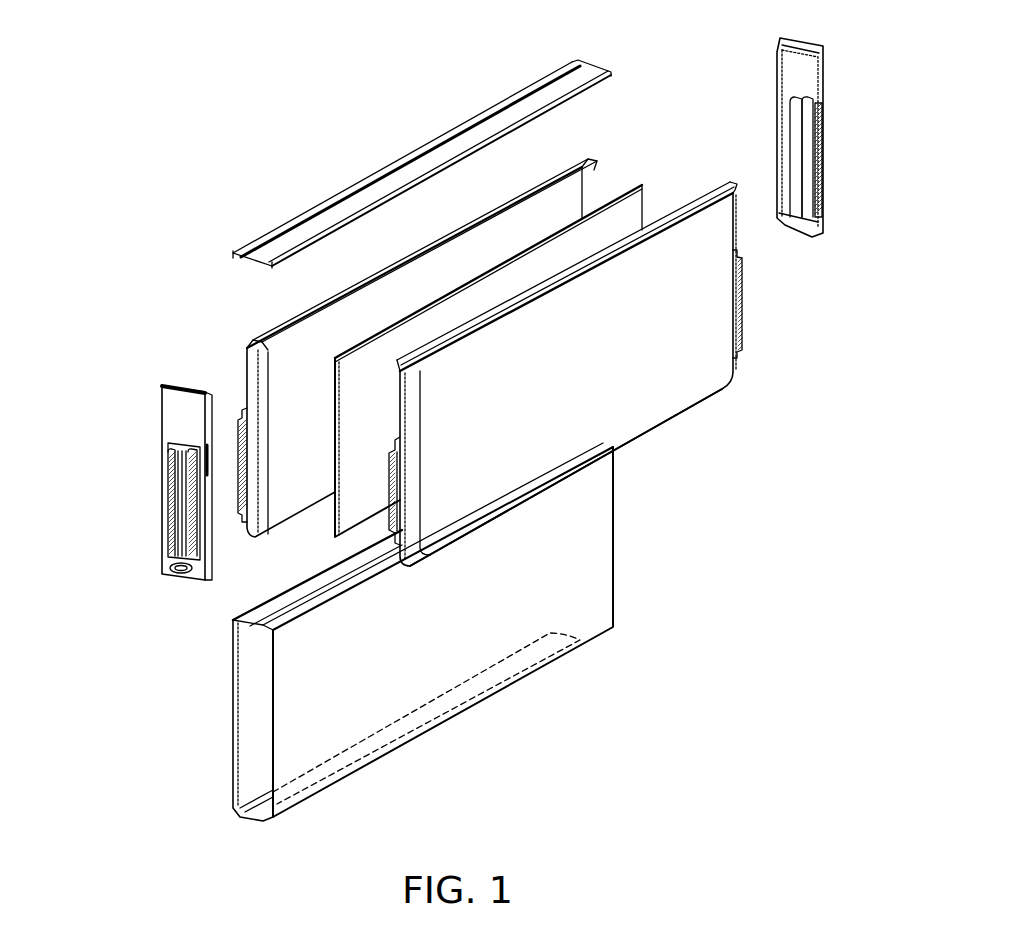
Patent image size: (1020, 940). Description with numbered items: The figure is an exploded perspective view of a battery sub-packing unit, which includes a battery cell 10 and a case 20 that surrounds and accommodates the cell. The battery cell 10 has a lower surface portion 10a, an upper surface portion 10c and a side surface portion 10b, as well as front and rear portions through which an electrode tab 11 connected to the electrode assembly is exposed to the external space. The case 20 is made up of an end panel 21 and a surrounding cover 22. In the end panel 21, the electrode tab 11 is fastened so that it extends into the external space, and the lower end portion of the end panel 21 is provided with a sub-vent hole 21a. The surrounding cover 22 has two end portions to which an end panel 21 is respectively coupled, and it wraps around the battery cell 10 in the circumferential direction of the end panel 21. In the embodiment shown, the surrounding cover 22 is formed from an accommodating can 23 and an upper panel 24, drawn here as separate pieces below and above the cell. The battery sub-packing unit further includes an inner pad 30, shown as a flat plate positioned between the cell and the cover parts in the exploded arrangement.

The battery cell 10 is at (853, 273).
The lower surface portion 10a is at (700, 402).
The side surface portion 10b is at (690, 333).
The upper surface portion 10c is at (718, 207).
The electrode tab 11 is at (390, 497).
The case 20 is at (70, 467).
The end panel 21 is at (173, 412).
The sub-vent hole 21a is at (178, 572).
The surrounding cover 22 is at (107, 645).
The accommodating can 23 is at (258, 681).
The upper panel 24 is at (283, 242).
The inner pad 30 is at (637, 212).